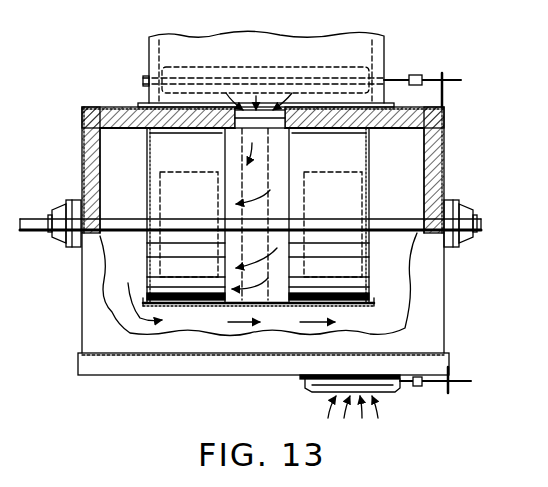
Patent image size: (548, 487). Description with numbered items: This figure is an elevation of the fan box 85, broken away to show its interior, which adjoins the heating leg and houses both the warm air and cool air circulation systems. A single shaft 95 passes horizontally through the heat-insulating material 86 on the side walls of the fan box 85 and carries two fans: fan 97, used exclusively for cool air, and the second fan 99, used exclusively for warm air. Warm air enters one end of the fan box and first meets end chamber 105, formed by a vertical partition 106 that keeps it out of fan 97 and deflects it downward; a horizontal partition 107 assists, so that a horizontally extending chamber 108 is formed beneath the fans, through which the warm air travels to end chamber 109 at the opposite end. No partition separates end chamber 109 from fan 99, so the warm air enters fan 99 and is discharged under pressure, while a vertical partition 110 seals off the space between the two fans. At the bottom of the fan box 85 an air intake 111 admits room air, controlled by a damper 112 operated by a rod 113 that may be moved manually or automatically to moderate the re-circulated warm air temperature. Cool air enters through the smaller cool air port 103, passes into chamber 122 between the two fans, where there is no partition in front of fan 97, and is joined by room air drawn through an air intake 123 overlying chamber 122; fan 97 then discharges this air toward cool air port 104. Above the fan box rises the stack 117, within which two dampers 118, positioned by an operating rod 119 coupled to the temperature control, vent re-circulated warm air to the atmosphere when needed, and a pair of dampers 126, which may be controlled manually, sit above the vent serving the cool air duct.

The fan box 85 is at (83, 107).
The heat-insulating material 86 is at (133, 108).
The shaft 95 is at (33, 217).
The fan 97 is at (196, 303).
The second fan 99 is at (346, 302).
The cool air port 103 is at (285, 162).
The cool air port 104 is at (236, 163).
The end chamber 105 is at (112, 161).
The vertical partition 106 is at (158, 184).
The horizontal partition 107 is at (258, 284).
The horizontally extending chamber 108 is at (186, 328).
The end chamber 109 is at (418, 159).
The vertical partition 110 is at (297, 194).
The air intake 111 is at (380, 392).
The damper 112 is at (314, 393).
The rod 113 is at (455, 383).
The stack 117 is at (367, 45).
The dampers 118 is at (350, 65).
The operating rod 119 is at (455, 78).
The chamber 122 is at (254, 214).
The air intake 123 is at (255, 97).
The dampers 126 is at (212, 62).